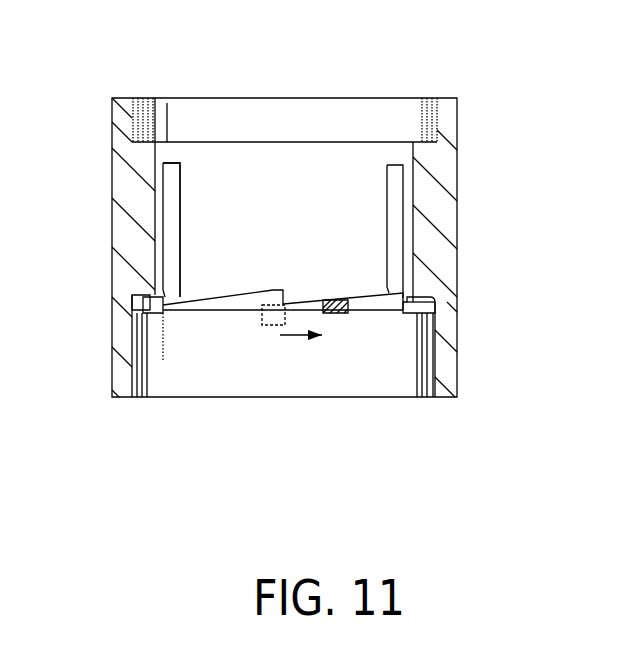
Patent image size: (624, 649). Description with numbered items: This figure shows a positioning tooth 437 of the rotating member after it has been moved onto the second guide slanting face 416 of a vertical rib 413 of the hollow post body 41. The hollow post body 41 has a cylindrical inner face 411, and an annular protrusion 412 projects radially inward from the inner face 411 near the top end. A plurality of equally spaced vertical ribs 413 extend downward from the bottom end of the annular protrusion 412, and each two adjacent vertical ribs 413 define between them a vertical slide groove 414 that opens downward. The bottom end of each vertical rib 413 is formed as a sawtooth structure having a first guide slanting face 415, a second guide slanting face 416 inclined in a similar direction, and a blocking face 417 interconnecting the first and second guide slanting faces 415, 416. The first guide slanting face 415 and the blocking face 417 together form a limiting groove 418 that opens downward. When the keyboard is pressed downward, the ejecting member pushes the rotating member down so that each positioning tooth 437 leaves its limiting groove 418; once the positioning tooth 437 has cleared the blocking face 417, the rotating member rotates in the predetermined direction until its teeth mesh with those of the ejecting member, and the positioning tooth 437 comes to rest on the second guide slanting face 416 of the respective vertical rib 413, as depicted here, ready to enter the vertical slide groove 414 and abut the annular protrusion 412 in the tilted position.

The hollow post body 41 is at (473, 131).
The cylindrical inner face 411 is at (159, 98).
The annular protrusion 412 is at (175, 152).
The vertical rib 413 is at (280, 185).
The vertical slide groove 414 is at (166, 203).
The first guide slanting face 415 is at (208, 311).
The second guide slanting face 416 is at (365, 313).
The blocking face 417 is at (283, 296).
The limiting groove 418 is at (266, 290).
The positioning tooth 437 is at (268, 312).